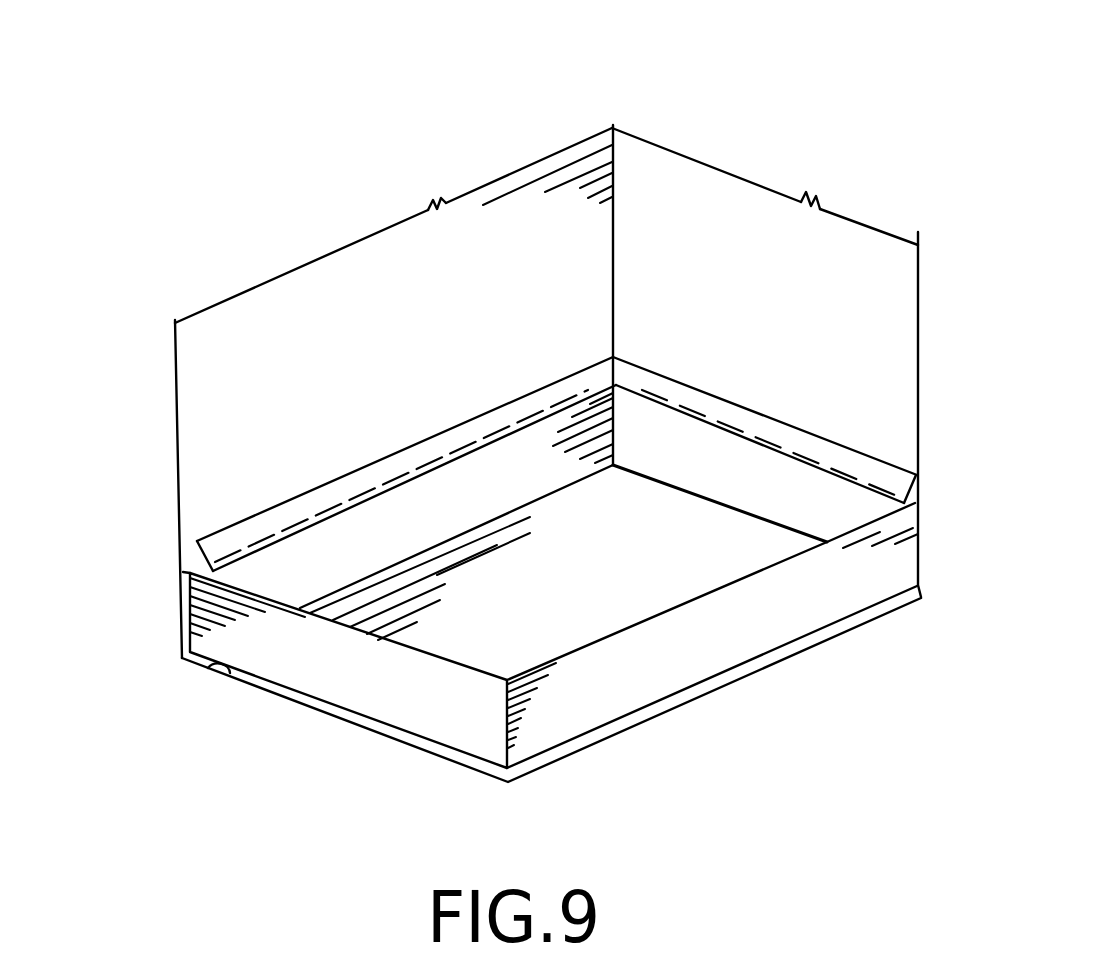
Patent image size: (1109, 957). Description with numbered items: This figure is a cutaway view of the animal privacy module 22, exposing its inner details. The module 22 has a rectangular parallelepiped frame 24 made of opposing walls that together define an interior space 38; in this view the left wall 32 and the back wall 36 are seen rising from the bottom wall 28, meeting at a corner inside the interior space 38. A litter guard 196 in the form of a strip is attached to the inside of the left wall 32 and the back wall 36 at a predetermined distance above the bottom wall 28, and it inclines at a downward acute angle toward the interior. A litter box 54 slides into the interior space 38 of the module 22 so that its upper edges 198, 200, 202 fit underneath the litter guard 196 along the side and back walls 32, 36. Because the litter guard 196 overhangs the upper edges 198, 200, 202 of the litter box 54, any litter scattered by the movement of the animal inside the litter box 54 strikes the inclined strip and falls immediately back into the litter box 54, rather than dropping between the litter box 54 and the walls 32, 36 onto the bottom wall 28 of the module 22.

The module 22 is at (495, 431).
The frame 24 is at (495, 645).
The bottom wall 28 is at (207, 667).
The left wall 32 is at (394, 393).
The back wall 36 is at (766, 362).
The interior space 38 is at (688, 306).
The litter box 54 is at (336, 674).
The litter guard 196 is at (406, 420).
The upper edge of the litter box 198 is at (642, 625).
The upper edge of the litter box 200 is at (526, 422).
The upper edge of the litter box 202 is at (833, 468).